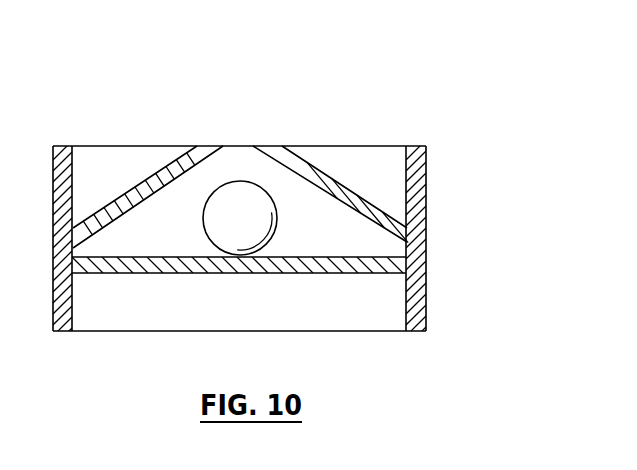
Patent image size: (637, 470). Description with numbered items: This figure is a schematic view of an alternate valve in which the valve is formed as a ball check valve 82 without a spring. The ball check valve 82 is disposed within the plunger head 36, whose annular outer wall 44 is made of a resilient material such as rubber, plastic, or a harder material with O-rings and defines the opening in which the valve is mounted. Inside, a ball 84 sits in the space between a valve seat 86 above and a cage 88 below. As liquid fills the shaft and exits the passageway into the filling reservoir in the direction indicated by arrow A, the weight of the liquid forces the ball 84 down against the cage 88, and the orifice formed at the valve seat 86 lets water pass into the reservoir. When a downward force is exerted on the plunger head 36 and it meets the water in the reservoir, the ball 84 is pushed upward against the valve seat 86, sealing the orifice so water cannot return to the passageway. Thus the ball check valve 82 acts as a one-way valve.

The plunger head 36 is at (429, 288).
The annular outer wall 44 is at (426, 207).
The ball check valve 82 is at (267, 179).
The ball 84 is at (233, 193).
The valve seat 86 is at (333, 183).
The cage 88 is at (147, 273).
The arrow A is at (296, 116).